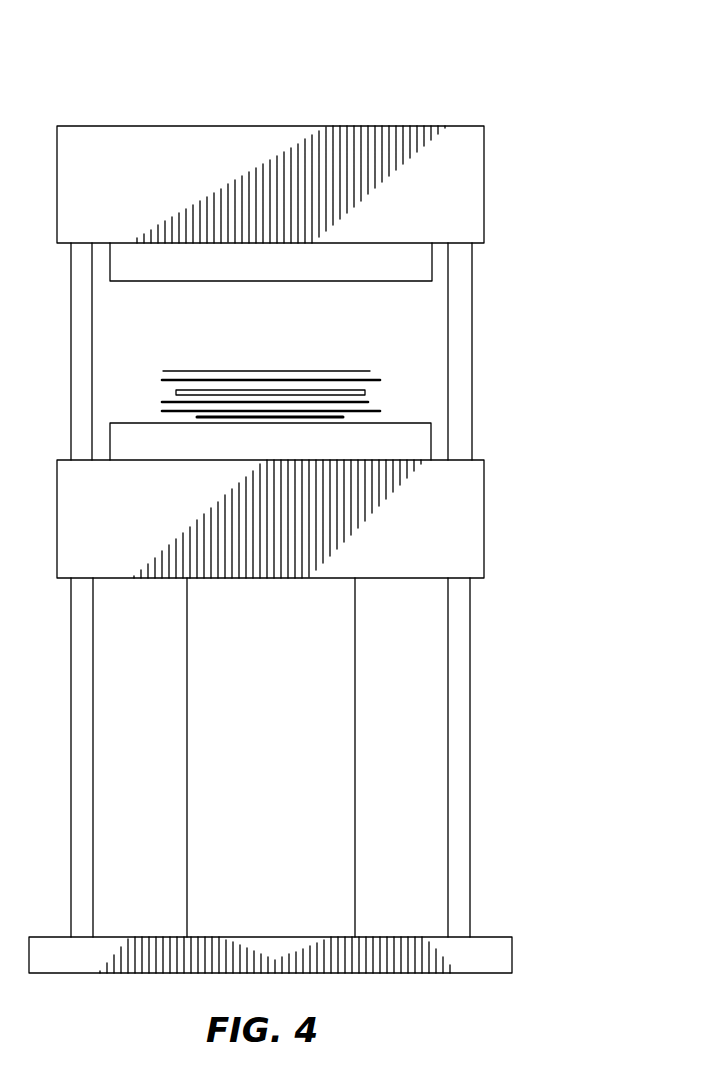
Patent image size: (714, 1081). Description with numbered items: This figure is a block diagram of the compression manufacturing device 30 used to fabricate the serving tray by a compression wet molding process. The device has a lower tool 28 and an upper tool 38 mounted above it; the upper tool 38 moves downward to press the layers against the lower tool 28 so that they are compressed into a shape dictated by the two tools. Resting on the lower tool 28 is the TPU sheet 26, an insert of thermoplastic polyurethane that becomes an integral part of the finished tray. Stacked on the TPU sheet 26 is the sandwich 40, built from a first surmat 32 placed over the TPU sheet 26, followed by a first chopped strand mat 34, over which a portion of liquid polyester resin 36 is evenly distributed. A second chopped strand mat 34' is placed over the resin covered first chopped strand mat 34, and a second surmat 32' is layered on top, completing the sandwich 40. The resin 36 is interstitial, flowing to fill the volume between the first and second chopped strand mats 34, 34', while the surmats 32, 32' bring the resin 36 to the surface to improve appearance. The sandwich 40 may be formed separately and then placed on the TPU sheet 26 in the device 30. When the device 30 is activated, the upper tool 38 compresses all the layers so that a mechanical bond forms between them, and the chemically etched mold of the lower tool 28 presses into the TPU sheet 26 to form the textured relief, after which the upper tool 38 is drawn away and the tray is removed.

The compression manufacturing device 30 is at (533, 148).
The upper tool 38 is at (405, 257).
The lower tool 28 is at (322, 450).
The TPU sheet 26 is at (343, 417).
The sandwich 40 is at (53, 368).
The second surmat 32' is at (371, 323).
The second chopped strand mat 34' is at (389, 339).
The polyester resin 36 is at (365, 392).
The first chopped strand mat 34 is at (398, 392).
The first surmat 32 is at (389, 420).